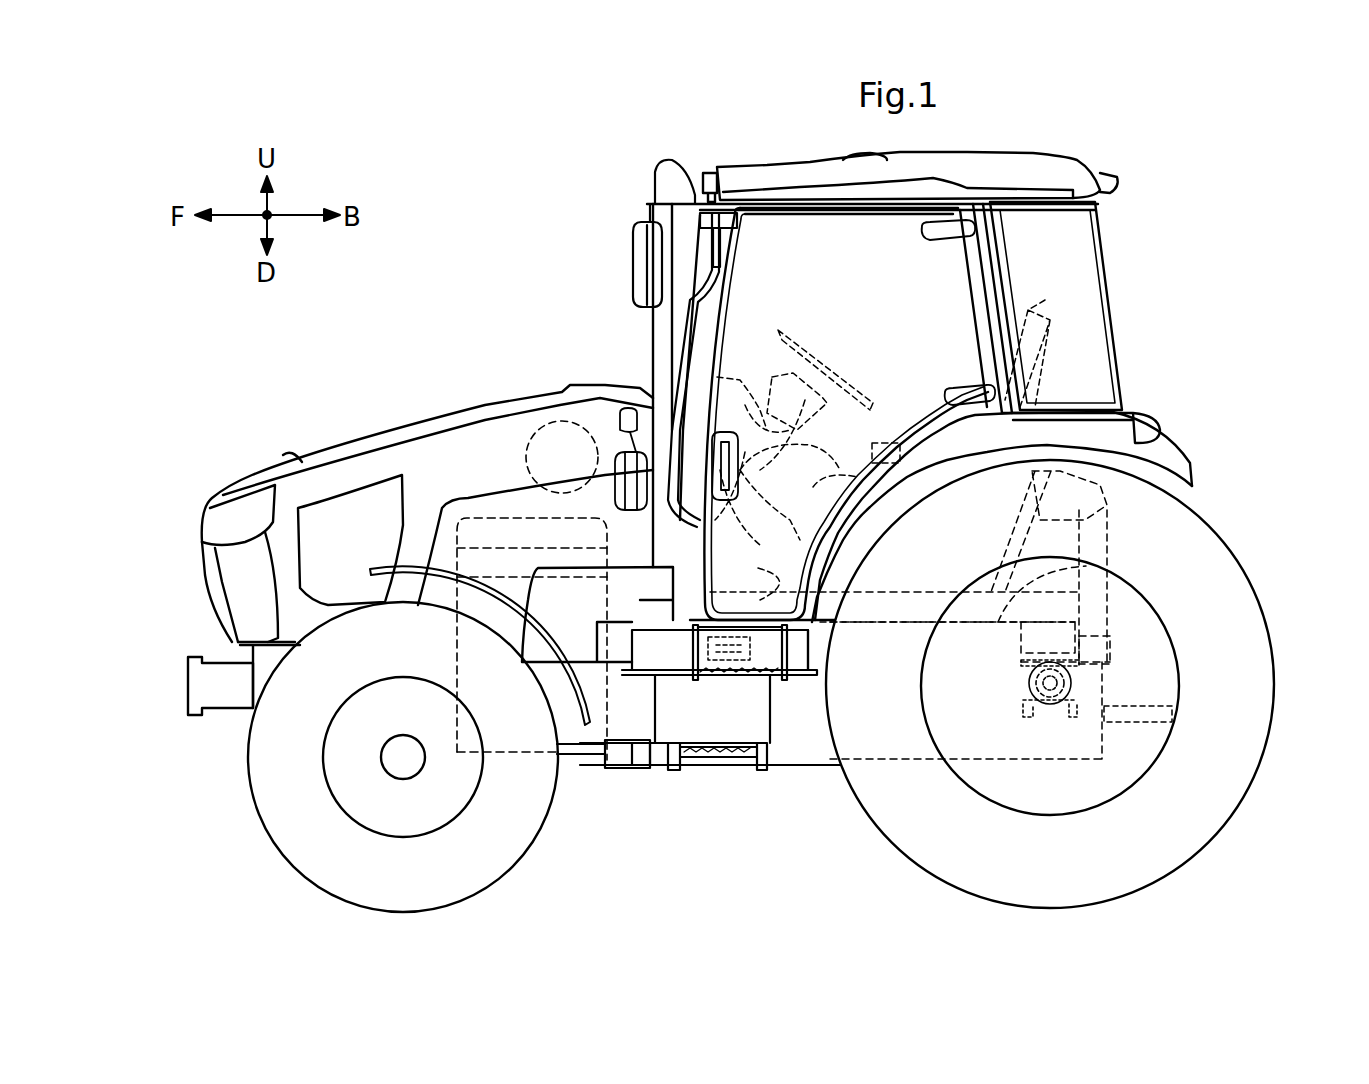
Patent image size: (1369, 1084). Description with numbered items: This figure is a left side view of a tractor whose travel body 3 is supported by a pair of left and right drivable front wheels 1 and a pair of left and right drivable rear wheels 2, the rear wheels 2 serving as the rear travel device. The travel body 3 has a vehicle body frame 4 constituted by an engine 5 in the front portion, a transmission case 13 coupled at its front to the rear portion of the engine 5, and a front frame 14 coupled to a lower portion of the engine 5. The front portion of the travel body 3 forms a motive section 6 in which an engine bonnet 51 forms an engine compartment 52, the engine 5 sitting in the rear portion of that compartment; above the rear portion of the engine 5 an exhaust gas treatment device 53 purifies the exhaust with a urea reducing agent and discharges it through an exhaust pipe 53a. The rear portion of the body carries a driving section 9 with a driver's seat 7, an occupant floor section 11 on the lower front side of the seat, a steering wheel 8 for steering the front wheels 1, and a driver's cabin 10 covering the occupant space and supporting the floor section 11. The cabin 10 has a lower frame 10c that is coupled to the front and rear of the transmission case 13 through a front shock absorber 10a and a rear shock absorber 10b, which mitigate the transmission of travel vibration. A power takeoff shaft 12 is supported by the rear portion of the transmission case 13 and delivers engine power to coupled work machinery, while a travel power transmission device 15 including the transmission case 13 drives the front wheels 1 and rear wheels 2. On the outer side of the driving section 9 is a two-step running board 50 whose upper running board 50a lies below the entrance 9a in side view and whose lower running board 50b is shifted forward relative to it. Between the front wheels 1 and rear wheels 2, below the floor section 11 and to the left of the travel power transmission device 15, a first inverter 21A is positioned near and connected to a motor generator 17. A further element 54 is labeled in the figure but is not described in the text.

The front wheels 1 is at (293, 872).
The rear wheels 2 is at (1207, 855).
The travel body 3 is at (832, 767).
The vehicle body frame 4 is at (176, 689).
The engine 5 is at (492, 518).
The motive section 6 is at (386, 420).
The driver's seat 7 is at (1045, 300).
The steering wheel 8 is at (820, 343).
The driving section 9 is at (817, 237).
The entrance 9a is at (810, 537).
The driver's cabin 10 is at (1013, 157).
The front shock absorber 10a is at (760, 650).
The rear shock absorber 10b is at (1121, 538).
The lower frame 10c is at (765, 605).
The occupant floor section 11 is at (820, 572).
The power takeoff shaft 12 is at (1148, 710).
The transmission case 13 is at (909, 759).
The travel power transmission device 15 is at (970, 615).
The front frame 14 is at (262, 660).
The first motor generator 17 is at (678, 660).
The first inverter 21A is at (658, 657).
The two-step running board 50 is at (710, 756).
The upper running board 50a is at (760, 675).
The lower running board 50b is at (720, 757).
The engine bonnet 51 is at (328, 455).
The engine compartment 52 is at (693, 213).
The exhaust gas treatment device 53 is at (545, 425).
The exhaust pipe 53a is at (667, 360).
The step bracket 54 is at (800, 675).